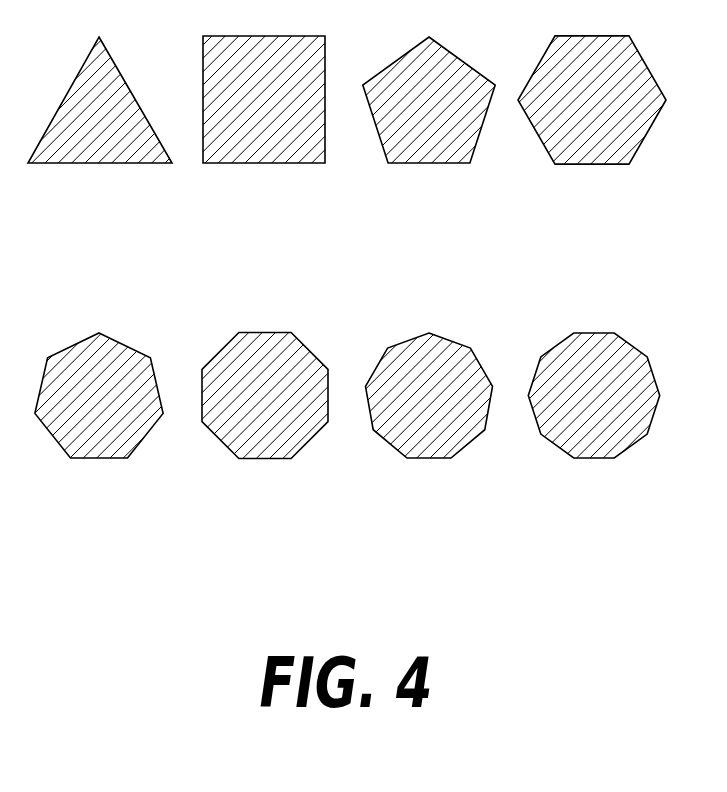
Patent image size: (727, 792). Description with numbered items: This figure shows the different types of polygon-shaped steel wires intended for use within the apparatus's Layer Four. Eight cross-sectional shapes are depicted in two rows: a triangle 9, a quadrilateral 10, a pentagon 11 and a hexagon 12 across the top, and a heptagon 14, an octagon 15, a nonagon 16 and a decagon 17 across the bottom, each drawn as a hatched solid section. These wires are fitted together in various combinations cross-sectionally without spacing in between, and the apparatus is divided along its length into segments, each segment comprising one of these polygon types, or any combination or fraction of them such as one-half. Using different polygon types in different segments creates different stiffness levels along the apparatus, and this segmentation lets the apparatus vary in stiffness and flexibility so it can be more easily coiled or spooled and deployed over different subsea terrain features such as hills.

The triangle 9 is at (100, 130).
The quadrilateral 10 is at (264, 129).
The pentagon 11 is at (429, 130).
The hexagon 12 is at (592, 129).
The heptagon 14 is at (99, 424).
The octagon 15 is at (265, 424).
The nonagon 16 is at (429, 424).
The decagon 17 is at (593, 424).